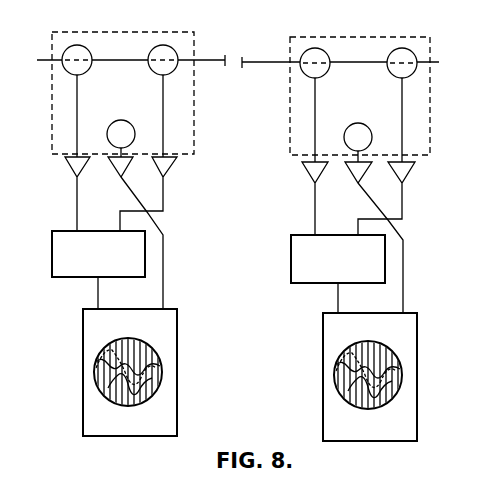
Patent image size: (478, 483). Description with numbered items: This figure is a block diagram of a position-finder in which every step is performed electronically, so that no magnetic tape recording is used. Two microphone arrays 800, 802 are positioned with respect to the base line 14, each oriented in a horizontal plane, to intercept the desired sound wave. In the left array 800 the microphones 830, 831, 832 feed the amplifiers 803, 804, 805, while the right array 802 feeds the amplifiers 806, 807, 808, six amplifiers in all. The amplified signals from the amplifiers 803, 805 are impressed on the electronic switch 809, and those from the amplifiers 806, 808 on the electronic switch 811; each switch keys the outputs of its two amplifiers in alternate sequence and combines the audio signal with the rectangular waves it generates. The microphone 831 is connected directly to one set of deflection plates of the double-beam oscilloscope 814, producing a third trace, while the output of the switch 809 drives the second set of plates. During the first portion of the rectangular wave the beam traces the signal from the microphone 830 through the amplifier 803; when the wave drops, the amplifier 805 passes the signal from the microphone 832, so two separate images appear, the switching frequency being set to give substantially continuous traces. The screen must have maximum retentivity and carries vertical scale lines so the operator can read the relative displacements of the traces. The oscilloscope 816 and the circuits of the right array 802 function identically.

The base line 14 is at (262, 58).
The microphone array 800 is at (130, 32).
The microphone array 802 is at (355, 37).
The microphone 830 is at (66, 66).
The microphone 831 is at (128, 120).
The microphone 832 is at (174, 68).
The amplifier 803 is at (72, 172).
The amplifier 804 is at (119, 180).
The amplifier 805 is at (167, 178).
The amplifier 806 is at (312, 176).
The amplifier 807 is at (356, 184).
The amplifier 808 is at (405, 180).
The electronic switch 809 is at (52, 252).
The electronic switch 811 is at (291, 258).
The oscilloscope 814 is at (83, 318).
The oscilloscope 816 is at (323, 323).